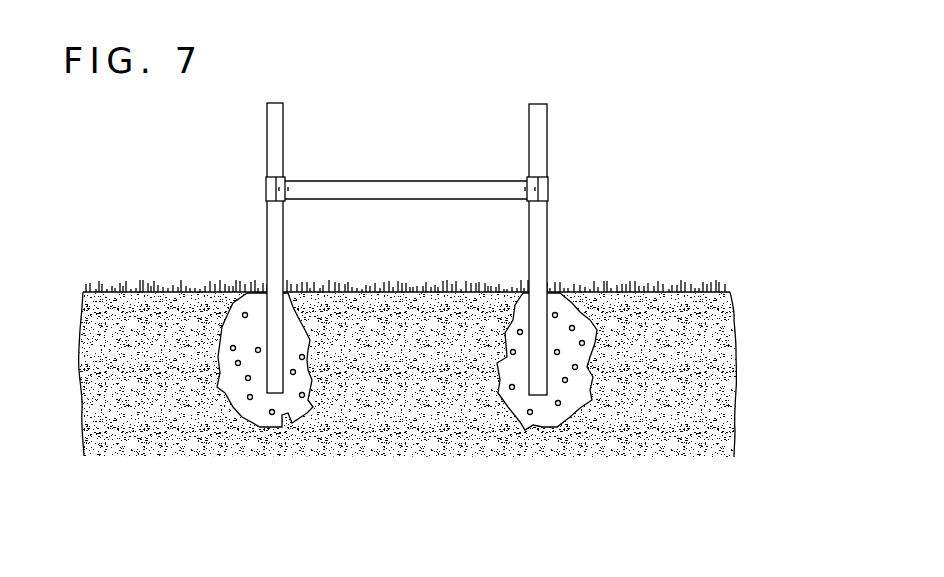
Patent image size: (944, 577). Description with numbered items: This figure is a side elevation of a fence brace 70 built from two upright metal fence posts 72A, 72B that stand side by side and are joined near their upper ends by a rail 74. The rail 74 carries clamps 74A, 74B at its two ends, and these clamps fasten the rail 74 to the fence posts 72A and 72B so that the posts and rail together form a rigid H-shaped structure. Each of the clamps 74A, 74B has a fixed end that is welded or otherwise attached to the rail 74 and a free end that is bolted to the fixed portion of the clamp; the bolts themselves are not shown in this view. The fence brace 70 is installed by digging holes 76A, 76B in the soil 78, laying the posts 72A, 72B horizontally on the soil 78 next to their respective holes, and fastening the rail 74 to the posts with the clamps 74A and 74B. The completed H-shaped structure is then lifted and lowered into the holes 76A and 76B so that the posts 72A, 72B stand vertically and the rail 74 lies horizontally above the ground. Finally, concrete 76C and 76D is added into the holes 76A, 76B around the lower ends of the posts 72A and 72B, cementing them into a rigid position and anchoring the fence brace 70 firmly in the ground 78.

The fence brace 70 is at (740, 139).
The upright metal fence post 72A is at (285, 118).
The upright metal fence post 72B is at (547, 113).
The rail 74 is at (352, 181).
The clamp 74A is at (266, 187).
The clamp 74B is at (547, 188).
The hole 76A is at (282, 415).
The hole 76B is at (545, 424).
The concrete 76C is at (288, 316).
The concrete 76D is at (580, 298).
The soil 78 is at (732, 347).